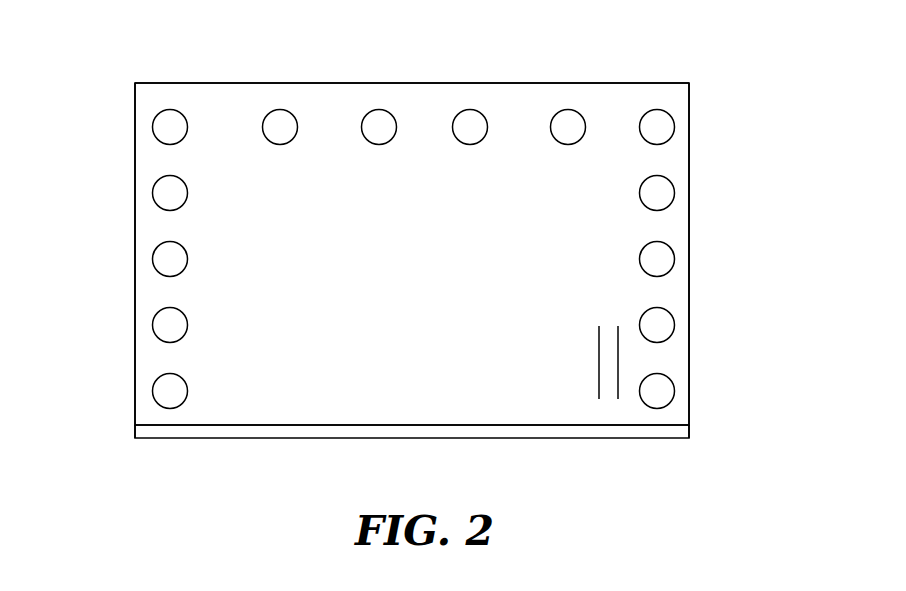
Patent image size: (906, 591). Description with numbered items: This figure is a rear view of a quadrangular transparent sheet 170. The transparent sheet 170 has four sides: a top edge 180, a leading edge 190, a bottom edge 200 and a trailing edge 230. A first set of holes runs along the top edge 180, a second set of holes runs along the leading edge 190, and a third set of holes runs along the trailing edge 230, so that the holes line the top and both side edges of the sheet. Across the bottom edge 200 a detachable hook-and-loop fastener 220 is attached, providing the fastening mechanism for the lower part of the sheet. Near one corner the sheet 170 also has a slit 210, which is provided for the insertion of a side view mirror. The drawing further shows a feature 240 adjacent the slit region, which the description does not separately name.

The transparent sheet 170 is at (104, 93).
The top edge 180 is at (122, 211).
The leading edge 190 is at (398, 70).
The bottom edge 200 is at (699, 278).
The slit 210 is at (277, 426).
The hook-and-loop fastener 220 is at (545, 449).
The trailing edge 230 is at (140, 374).
The connector / slot lines 240 is at (627, 399).